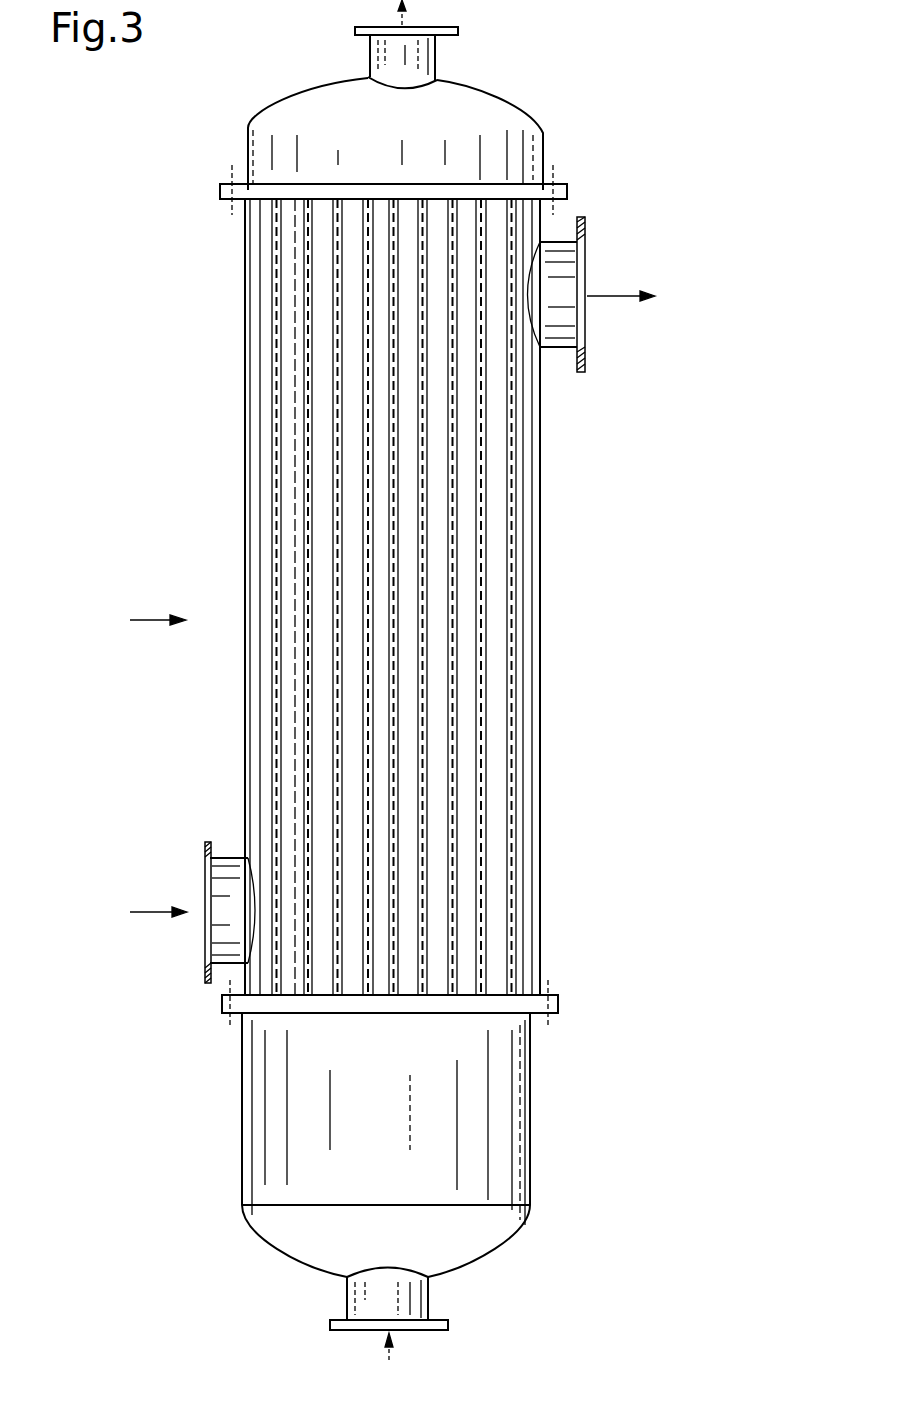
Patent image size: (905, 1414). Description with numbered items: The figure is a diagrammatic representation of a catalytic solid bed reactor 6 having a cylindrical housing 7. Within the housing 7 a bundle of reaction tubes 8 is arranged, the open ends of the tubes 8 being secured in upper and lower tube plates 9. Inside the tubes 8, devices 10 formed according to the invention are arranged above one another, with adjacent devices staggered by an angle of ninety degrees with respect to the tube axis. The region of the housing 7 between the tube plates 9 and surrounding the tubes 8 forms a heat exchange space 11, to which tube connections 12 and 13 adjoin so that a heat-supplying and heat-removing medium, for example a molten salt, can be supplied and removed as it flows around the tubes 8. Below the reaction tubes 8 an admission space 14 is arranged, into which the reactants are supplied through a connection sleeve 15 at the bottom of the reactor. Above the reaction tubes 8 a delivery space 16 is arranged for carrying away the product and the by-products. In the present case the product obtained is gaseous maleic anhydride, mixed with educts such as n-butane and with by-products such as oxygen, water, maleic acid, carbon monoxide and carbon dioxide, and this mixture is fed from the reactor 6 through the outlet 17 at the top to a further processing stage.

The catalytic solid bed reactor 6 is at (147, 621).
The cylindrical housing 7 is at (245, 562).
The tubes 8 is at (514, 507).
The tube plates 9 is at (538, 192).
The devices 10 is at (513, 442).
The heat exchange space 11 is at (524, 592).
The tube connection 12 is at (222, 856).
The tube connection 13 is at (587, 263).
The admission space 14 is at (503, 1140).
The connection sleeve 15 is at (432, 1310).
The delivery space 16 is at (500, 130).
The outlet 17 is at (437, 60).